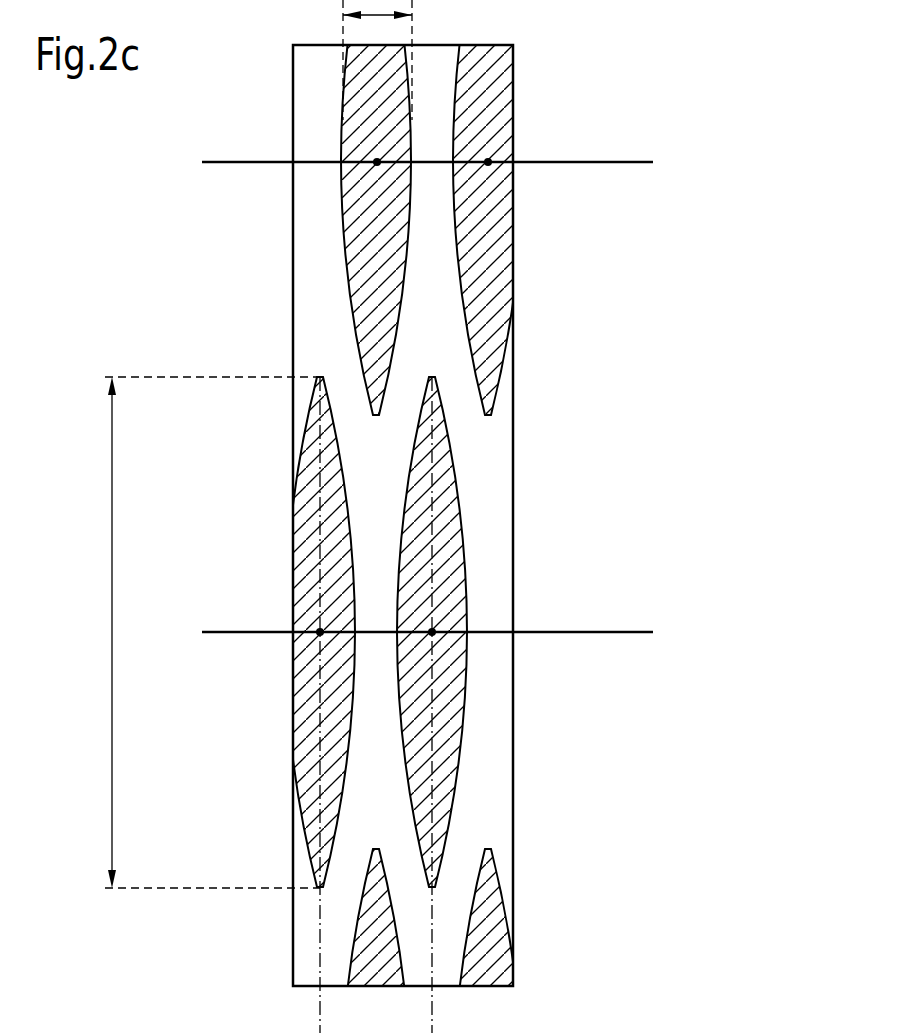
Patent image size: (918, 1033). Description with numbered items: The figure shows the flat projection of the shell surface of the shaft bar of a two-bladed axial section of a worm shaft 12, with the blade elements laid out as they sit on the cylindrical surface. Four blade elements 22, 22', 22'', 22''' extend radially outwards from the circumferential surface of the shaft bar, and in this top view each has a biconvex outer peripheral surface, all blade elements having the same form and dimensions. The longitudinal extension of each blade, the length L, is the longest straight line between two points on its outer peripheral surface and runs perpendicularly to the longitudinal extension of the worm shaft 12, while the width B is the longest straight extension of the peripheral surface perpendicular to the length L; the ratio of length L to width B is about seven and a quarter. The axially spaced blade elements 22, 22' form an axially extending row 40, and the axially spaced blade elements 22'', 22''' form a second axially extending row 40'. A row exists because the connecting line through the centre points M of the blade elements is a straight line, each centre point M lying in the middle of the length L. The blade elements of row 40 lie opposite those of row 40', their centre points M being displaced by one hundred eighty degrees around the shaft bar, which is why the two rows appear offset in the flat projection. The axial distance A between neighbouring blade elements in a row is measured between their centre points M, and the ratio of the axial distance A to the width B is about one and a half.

The worm shaft 12 is at (742, 227).
The blade element 22 is at (510, 705).
The blade element 22' is at (266, 705).
The blade element 22'' is at (302, 207).
The blade element 22''' is at (545, 207).
The axially extending row 40 is at (427, 660).
The axially extending row 40' is at (427, 184).
The centre point M is at (377, 162).
The length L is at (199, 632).
The width B is at (377, 60).
The axial distance A is at (376, 1028).